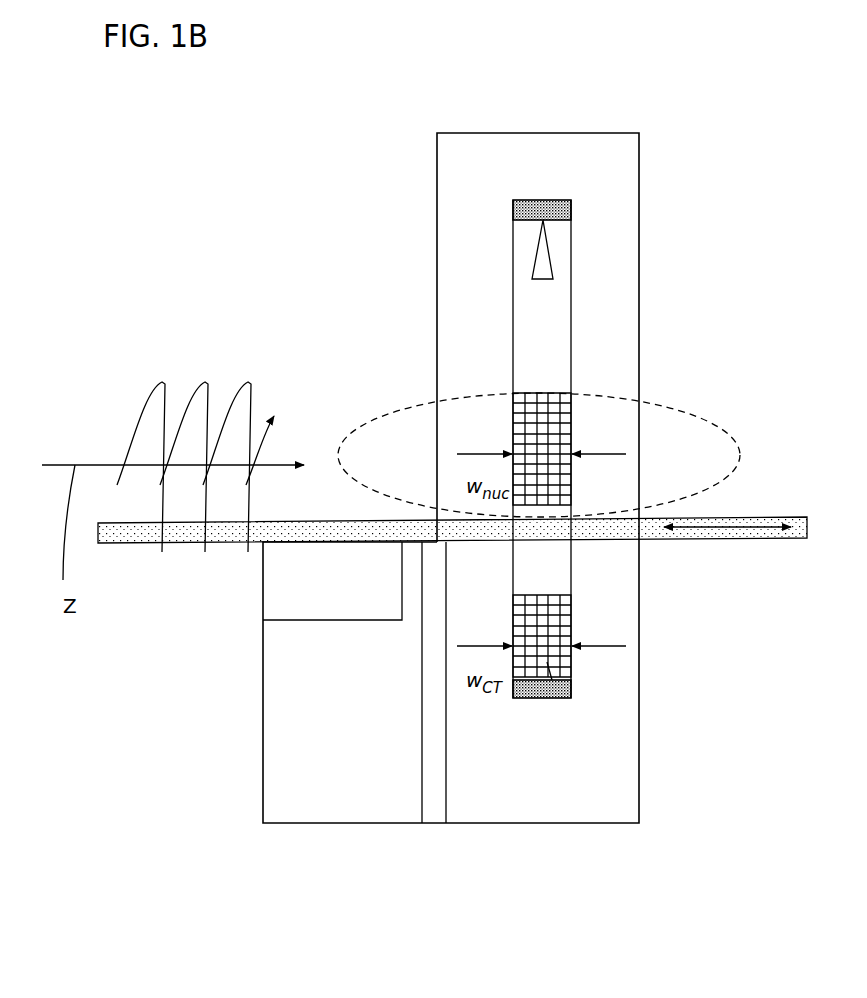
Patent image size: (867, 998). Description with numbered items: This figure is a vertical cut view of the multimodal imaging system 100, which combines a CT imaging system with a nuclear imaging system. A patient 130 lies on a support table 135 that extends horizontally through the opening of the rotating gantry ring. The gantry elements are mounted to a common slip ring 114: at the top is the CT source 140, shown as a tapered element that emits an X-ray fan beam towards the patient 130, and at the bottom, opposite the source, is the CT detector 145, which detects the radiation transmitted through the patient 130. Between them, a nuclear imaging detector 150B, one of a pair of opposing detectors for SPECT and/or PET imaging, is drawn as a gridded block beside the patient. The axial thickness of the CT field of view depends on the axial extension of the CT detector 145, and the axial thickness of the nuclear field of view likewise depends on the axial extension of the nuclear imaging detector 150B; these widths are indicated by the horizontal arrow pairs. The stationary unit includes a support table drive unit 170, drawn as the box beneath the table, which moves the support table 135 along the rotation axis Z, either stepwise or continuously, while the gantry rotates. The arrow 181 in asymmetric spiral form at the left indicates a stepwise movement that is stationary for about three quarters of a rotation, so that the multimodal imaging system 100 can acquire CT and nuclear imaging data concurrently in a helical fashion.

The multimodal imaging system 100 is at (168, 186).
The common slip ring 114 is at (513, 212).
The CT source 140 is at (532, 260).
The patient 130 is at (382, 417).
The nuclear imaging detector 150B is at (560, 413).
The arrow 181 is at (143, 408).
The support table 135 is at (650, 540).
The support table drive unit 170 is at (263, 587).
The CT detector 145 is at (557, 698).